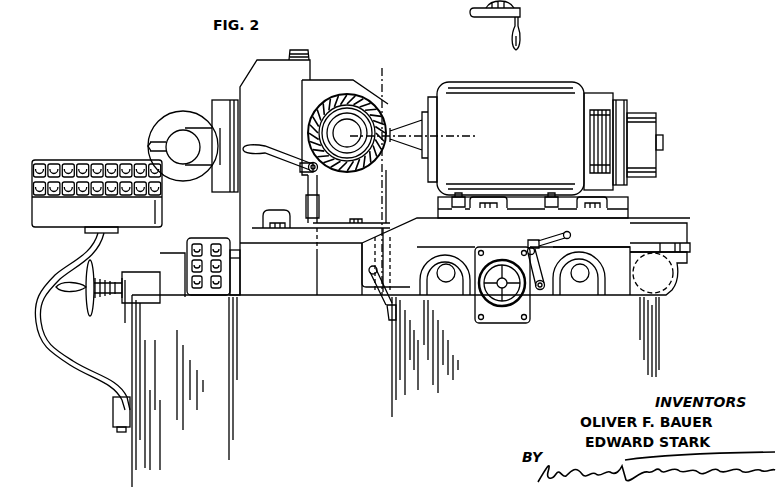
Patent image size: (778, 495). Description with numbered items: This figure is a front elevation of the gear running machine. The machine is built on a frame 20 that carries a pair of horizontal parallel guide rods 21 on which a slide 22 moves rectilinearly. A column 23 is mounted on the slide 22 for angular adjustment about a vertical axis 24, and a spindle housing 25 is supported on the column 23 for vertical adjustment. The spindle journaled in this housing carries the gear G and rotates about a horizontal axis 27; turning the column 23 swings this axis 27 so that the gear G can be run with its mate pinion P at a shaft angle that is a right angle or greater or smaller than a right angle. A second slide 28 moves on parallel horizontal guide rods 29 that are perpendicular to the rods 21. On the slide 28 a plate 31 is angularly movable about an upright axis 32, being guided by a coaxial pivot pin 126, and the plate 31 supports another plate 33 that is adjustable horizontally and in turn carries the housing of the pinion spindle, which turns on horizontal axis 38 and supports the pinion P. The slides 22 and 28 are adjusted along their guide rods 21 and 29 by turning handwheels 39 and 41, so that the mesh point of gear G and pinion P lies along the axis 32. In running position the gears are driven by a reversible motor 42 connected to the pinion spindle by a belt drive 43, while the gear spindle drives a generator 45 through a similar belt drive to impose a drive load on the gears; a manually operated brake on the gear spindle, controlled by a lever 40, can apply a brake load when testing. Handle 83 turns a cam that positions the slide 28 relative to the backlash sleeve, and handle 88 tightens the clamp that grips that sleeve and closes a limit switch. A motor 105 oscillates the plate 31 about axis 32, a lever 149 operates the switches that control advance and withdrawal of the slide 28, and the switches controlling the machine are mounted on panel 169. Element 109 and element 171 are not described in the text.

The frame 20 is at (320, 341).
The guide rods 21 is at (230, 257).
The slide 22 is at (296, 274).
The column 23 is at (283, 111).
The vertical axis 24 is at (316, 282).
The spindle housing 25 is at (336, 84).
The horizontal axis 27 is at (347, 133).
The slide 28 is at (617, 280).
The guide rods 29 is at (445, 280).
The plate 31 is at (402, 230).
The upright axis 32 is at (381, 200).
The plate 33 is at (593, 212).
The horizontal axis 38 is at (452, 142).
The handwheel 39 is at (96, 308).
The lever 40 is at (285, 157).
The handwheel 41 is at (522, 12).
The reversible motor 42 is at (560, 124).
The belt drive 43 is at (606, 106).
The generator 45 is at (172, 120).
The handle 83 is at (543, 291).
The handle 88 is at (556, 236).
The motor 105 is at (677, 273).
The bracket 109 is at (660, 234).
The pivot pin 126 is at (375, 253).
The lever 149 is at (385, 302).
The panel 169 is at (208, 240).
The terminal block 171 is at (90, 157).
The gear G is at (362, 97).
The pinion P is at (383, 158).